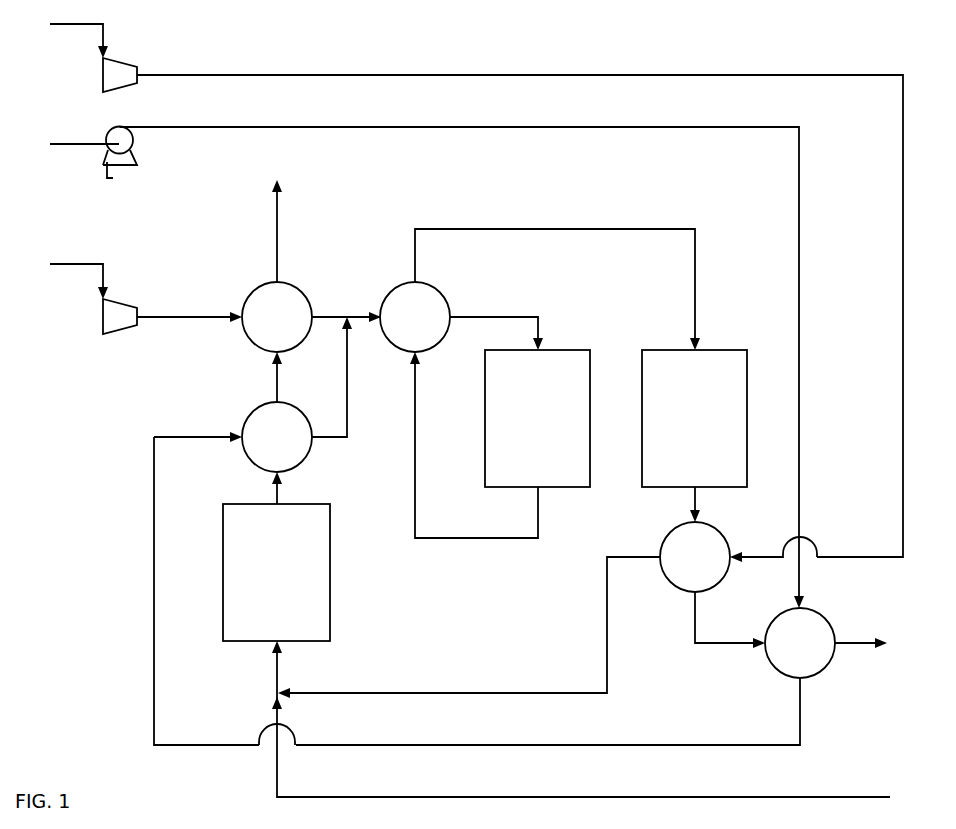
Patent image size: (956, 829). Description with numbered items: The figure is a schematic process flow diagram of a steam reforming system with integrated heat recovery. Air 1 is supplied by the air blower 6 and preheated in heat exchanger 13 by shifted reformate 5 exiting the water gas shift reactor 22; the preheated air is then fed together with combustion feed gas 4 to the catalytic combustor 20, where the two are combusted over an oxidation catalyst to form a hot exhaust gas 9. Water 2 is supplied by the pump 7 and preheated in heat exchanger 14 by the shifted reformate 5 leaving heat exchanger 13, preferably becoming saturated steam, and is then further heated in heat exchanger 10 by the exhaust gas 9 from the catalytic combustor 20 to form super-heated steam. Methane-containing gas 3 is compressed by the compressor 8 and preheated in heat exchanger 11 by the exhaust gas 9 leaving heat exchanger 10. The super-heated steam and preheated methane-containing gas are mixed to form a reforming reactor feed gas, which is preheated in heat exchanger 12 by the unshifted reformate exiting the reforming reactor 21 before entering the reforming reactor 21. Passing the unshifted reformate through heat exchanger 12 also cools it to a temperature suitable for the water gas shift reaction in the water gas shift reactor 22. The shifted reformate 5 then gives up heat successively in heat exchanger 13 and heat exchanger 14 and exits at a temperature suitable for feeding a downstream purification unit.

The air 1 is at (69, 38).
The water 2 is at (74, 148).
The methane-containing gas 3 is at (69, 278).
The combustion feed gas 4 is at (590, 725).
The shifted reformate 5 is at (872, 644).
The air blower 6 is at (503, 310).
The pump 7 is at (453, 368).
The compressor 8 is at (172, 316).
The exhaust gas 9 is at (286, 228).
The heat exchanger 10 is at (253, 531).
The heat exchanger 11 is at (311, 317).
The heat exchanger 12 is at (540, 290).
The heat exchanger 13 is at (521, 610).
The heat exchanger 14 is at (565, 676).
The catalytic combustor 20 is at (276, 556).
The reforming reactor 21 is at (500, 444).
The water gas shift reactor 22 is at (694, 436).